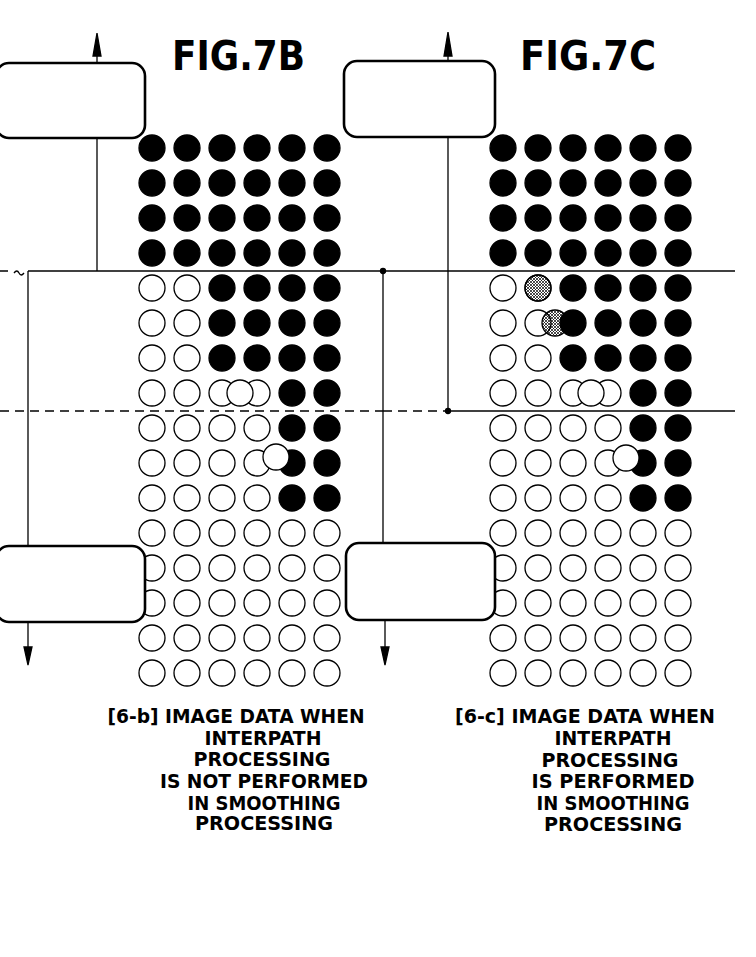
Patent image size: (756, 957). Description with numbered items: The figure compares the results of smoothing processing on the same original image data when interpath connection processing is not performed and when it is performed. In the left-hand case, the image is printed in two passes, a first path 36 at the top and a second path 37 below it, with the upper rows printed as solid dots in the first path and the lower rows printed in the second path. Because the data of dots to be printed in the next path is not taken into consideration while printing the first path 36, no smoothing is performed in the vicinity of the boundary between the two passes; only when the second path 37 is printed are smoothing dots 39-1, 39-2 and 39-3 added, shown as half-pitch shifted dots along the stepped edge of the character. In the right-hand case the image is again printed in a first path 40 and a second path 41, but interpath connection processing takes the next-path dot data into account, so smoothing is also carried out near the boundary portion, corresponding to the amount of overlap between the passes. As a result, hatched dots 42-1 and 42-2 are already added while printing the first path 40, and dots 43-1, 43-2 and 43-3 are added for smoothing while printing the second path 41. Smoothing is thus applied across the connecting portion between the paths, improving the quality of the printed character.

In FIG. 7B, the first path 36 is at (35, 63).
In FIG. 7B, the second path 37 is at (88, 546).
In FIG. 7B, the dot 39-1 is at (240, 387).
In FIG. 7B, the dot 39-2 is at (250, 421).
In FIG. 7B, the dot 39-3 is at (284, 456).
In FIG. 7C, the first path 40 is at (386, 61).
In FIG. 7C, the second path 41 is at (435, 543).
In FIG. 7C, the dot 42-1 is at (538, 283).
In FIG. 7C, the dot 42-2 is at (555, 318).
In FIG. 7C, the dot 43-1 is at (590, 387).
In FIG. 7C, the dot 43-2 is at (590, 423).
In FIG. 7C, the dot 43-3 is at (624, 456).